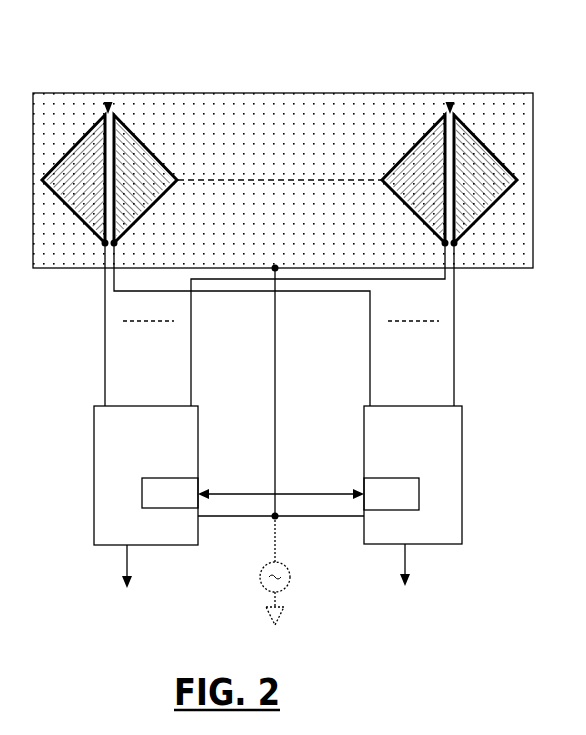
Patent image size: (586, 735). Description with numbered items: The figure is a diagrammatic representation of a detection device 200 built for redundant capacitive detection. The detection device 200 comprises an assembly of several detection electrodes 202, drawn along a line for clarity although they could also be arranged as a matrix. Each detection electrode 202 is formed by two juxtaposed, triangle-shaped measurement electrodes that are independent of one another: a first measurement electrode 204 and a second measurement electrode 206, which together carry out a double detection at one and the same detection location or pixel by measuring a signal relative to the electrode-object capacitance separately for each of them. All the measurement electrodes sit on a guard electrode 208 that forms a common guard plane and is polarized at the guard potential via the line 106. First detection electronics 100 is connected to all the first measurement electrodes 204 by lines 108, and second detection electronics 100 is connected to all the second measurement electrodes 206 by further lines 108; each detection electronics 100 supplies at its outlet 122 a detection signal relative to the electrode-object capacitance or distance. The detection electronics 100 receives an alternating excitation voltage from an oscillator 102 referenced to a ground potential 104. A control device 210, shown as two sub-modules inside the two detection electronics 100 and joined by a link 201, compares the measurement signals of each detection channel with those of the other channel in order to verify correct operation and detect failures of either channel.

The detection device 200 is at (442, 663).
The detection electrode 202 is at (109, 106).
The guard electrode 208 is at (310, 93).
The first measurement electrode 204 is at (97, 188).
The second measurement electrode 206 is at (155, 188).
The line 108 is at (480, 362).
The detection electronics 100 is at (150, 461).
The control device 210 is at (192, 506).
The communication link 201 is at (220, 494).
The line 106 is at (275, 432).
The oscillator 102 is at (260, 581).
The ground potential 104 is at (287, 612).
The outlet 122 is at (447, 571).